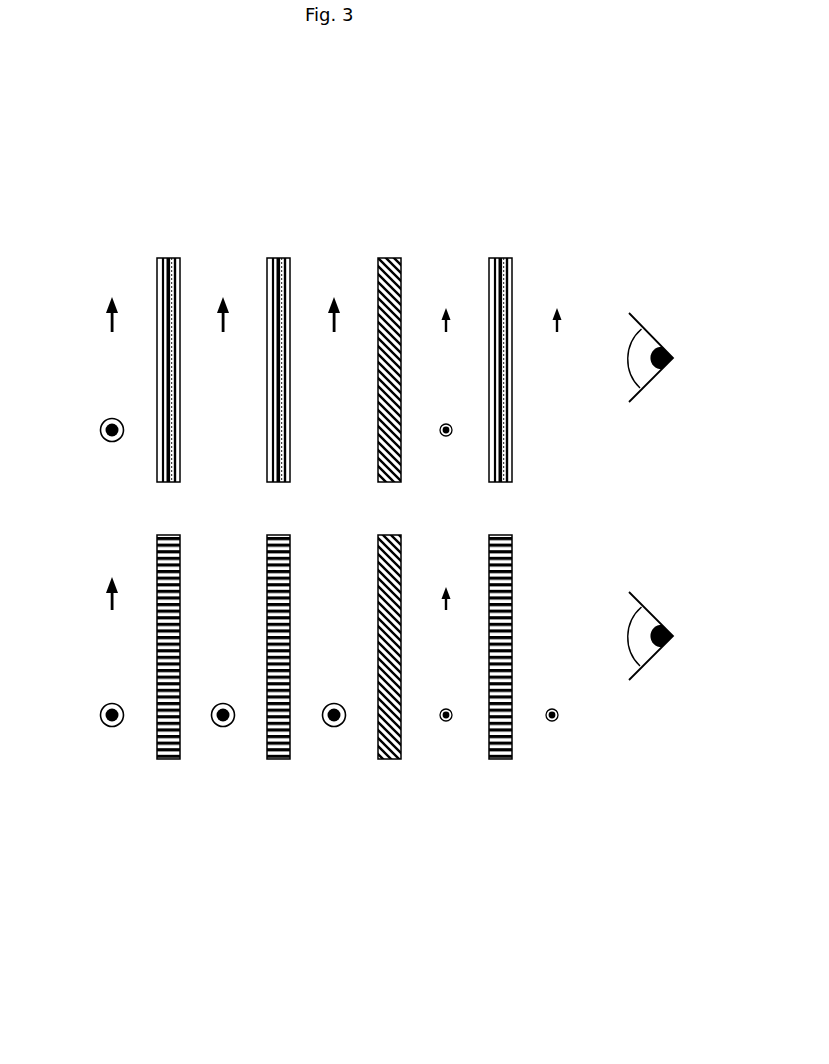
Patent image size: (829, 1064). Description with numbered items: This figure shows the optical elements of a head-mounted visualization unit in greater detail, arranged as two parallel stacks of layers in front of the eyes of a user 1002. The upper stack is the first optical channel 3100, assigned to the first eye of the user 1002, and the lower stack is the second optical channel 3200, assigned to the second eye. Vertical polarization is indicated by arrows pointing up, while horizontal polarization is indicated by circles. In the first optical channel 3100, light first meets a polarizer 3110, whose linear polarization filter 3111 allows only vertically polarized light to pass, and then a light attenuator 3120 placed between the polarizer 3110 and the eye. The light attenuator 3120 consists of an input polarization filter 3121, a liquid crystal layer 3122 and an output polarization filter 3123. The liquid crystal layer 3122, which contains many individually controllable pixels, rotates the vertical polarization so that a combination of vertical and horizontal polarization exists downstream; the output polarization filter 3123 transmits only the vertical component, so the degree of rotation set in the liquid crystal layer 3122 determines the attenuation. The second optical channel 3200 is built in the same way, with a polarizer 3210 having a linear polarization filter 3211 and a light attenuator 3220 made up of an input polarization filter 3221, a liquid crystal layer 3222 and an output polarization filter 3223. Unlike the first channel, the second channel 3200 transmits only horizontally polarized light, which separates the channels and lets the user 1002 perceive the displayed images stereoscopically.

The first optical channel 3100 is at (301, 266).
The second optical channel 3200 is at (301, 762).
The polarizer 3110 is at (133, 185).
The linear polarization filter 3111 is at (167, 258).
The light attenuator 3120 is at (253, 183).
The input polarization filter 3121 is at (277, 258).
The liquid crystal layer 3122 is at (388, 258).
The output polarization filter 3123 is at (499, 258).
The polarizer 3210 is at (133, 847).
The linear polarization filter 3211 is at (167, 759).
The light attenuator 3220 is at (253, 846).
The input polarization filter 3221 is at (277, 759).
The liquid crystal layer 3222 is at (388, 759).
The output polarization filter 3223 is at (499, 759).
The user 1002 is at (674, 360).